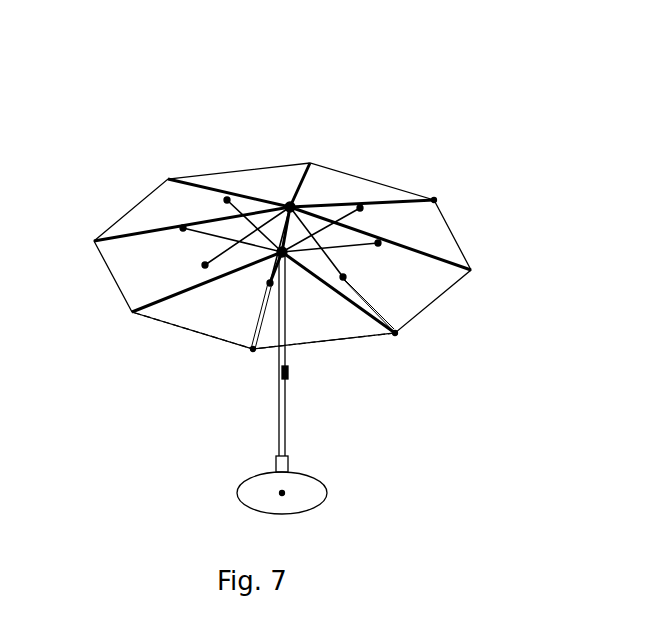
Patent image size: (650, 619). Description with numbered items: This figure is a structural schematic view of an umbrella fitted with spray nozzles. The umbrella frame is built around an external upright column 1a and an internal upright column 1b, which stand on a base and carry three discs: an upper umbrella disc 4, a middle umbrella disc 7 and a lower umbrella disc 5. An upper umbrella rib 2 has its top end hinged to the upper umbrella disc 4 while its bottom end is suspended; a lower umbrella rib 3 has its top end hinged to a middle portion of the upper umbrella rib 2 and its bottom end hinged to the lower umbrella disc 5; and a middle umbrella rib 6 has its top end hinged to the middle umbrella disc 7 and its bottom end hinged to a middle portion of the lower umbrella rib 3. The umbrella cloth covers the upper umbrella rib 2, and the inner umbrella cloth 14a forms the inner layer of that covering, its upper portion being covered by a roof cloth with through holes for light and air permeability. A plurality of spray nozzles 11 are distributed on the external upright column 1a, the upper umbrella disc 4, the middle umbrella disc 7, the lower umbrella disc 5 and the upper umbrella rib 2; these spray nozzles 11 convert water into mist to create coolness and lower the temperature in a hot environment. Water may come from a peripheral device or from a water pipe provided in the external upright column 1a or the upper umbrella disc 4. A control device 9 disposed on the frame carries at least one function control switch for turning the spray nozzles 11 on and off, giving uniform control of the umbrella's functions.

The external upright column 1a is at (287, 413).
The internal upright column 1b is at (200, 230).
The upper umbrella rib 2 is at (290, 195).
The lower umbrella rib 3 is at (330, 185).
The upper umbrella disc 4 is at (278, 190).
The lower umbrella disc 5 is at (265, 263).
The middle umbrella rib 6 is at (355, 195).
The middle umbrella disc 7 is at (177, 208).
The control device 9 is at (290, 375).
The spray nozzle 11 is at (440, 212).
The inner umbrella cloth 14a is at (152, 190).